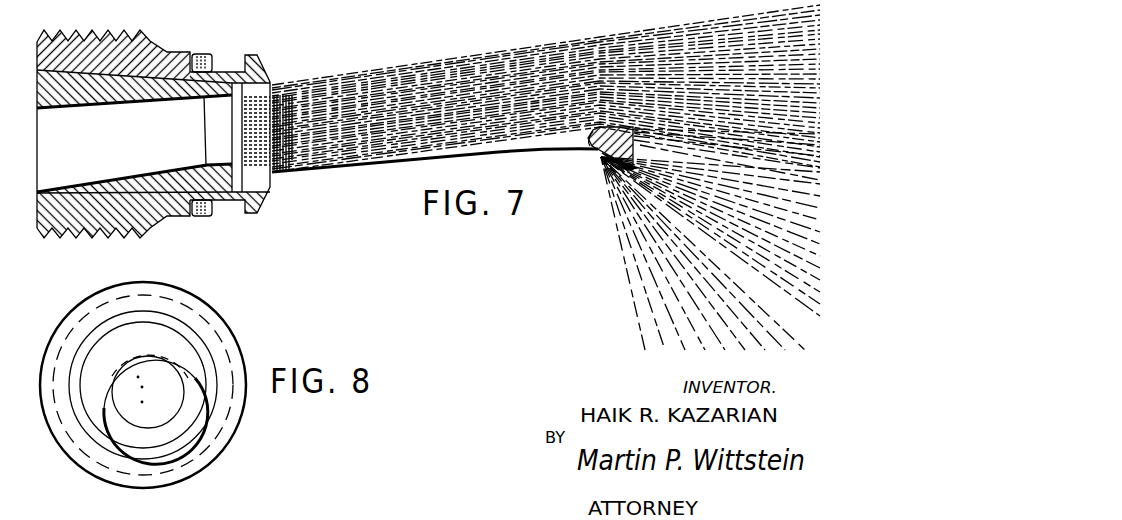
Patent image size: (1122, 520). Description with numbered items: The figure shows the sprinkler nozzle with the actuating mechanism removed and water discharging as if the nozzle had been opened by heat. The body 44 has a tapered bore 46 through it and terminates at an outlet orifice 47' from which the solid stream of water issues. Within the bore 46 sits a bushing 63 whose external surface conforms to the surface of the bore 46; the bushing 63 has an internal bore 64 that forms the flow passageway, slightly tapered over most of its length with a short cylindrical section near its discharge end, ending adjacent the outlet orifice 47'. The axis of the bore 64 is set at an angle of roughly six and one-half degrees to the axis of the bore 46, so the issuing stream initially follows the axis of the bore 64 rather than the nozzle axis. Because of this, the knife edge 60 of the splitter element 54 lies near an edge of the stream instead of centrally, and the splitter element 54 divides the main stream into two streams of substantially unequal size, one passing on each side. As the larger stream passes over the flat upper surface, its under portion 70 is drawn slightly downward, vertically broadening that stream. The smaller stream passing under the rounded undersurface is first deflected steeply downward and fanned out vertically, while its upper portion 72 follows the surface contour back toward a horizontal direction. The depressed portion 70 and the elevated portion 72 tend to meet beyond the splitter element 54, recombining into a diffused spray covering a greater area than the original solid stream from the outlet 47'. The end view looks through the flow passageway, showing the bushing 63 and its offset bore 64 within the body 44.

In FIG. 7, the body 44 is at (173, 213).
In FIG. 7, the tapered bore 46 is at (100, 185).
In FIG. 7, the outlet orifice 47' is at (273, 137).
In FIG. 7, the splitter element 54 is at (634, 150).
In FIG. 7, the knife edge 60 is at (591, 150).
In FIG. 7, the bushing 63 is at (138, 104).
In FIG. 8, the bushing 63 is at (152, 332).
In FIG. 7, the internal bore 64 is at (176, 171).
In FIG. 8, the internal bore 64 is at (104, 410).
In FIG. 7, the under portion of the larger stream 70 is at (722, 145).
In FIG. 7, the upper portion of the smaller stream 72 is at (734, 191).